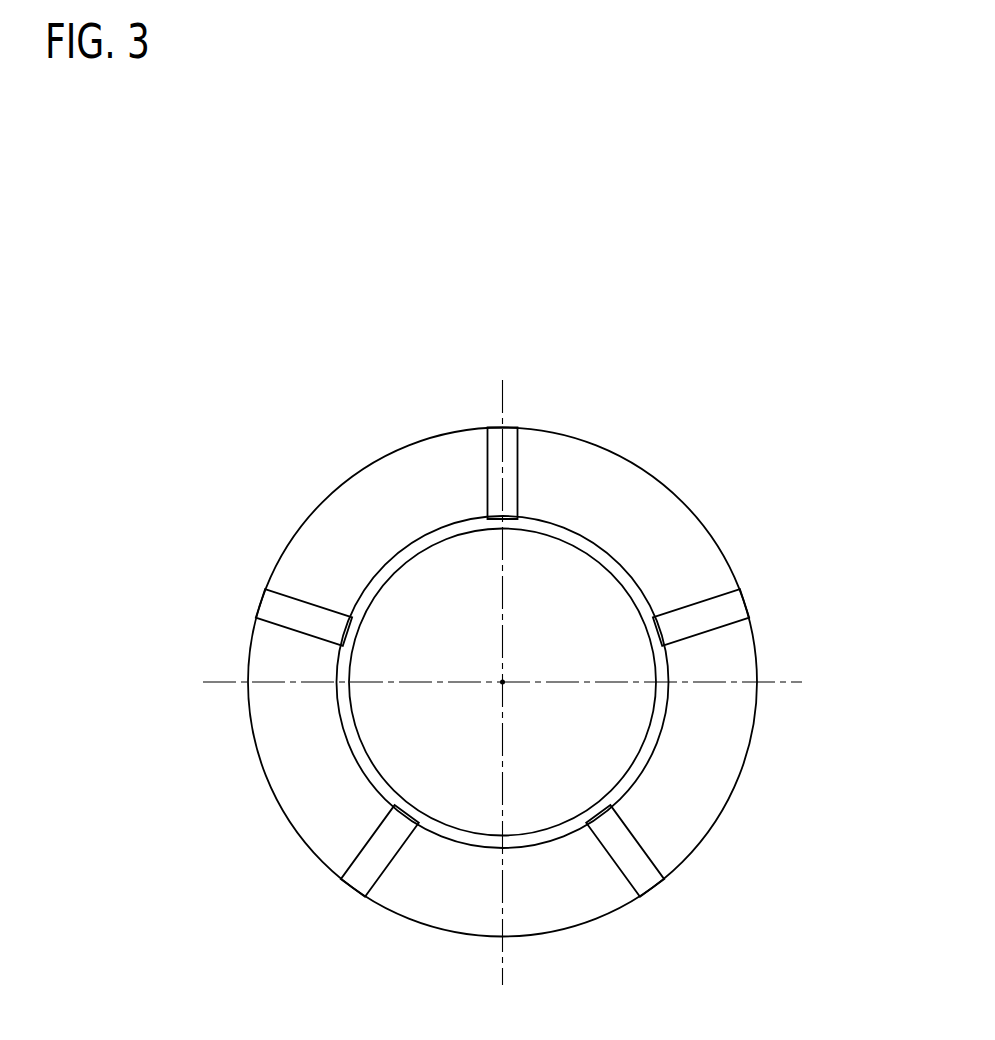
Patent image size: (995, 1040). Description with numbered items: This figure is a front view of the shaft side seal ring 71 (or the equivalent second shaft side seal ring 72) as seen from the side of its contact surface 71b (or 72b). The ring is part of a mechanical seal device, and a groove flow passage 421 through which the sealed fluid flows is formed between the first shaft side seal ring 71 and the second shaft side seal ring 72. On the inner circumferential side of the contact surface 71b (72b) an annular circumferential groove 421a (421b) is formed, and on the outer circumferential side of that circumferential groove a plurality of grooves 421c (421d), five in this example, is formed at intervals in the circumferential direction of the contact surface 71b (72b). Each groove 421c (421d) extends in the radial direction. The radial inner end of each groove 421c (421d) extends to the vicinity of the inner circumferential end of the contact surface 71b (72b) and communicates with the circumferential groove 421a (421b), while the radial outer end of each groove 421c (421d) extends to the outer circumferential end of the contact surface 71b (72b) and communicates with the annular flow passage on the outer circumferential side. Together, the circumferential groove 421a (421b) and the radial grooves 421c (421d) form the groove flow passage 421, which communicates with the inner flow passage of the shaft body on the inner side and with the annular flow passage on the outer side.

The first shaft side seal ring 71 is at (380, 457).
The second shaft side seal ring 72 is at (502, 640).
The contact surface 71b is at (660, 497).
The contact surface 72b is at (502, 675).
The groove flow passage 421 is at (588, 560).
The circumferential groove 421a is at (363, 602).
The circumferential groove 421b is at (503, 682).
The groove 421c is at (519, 453).
The groove 421d is at (503, 663).